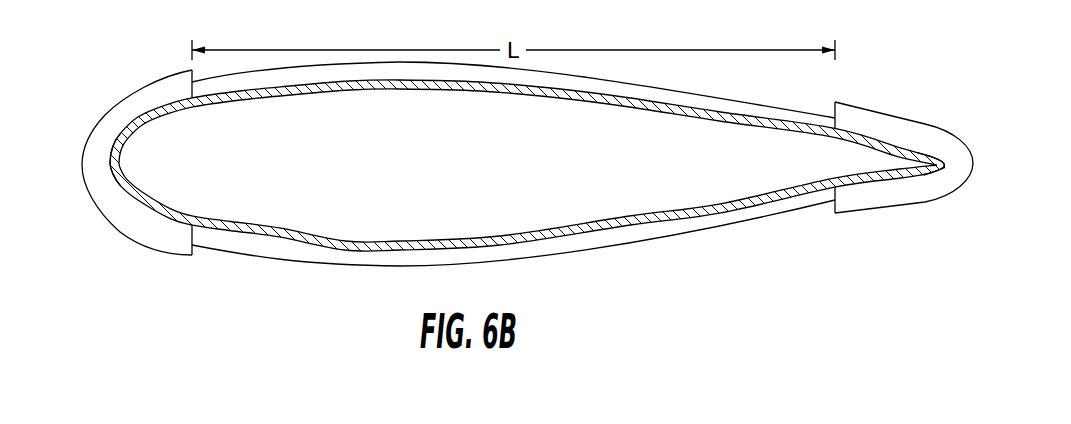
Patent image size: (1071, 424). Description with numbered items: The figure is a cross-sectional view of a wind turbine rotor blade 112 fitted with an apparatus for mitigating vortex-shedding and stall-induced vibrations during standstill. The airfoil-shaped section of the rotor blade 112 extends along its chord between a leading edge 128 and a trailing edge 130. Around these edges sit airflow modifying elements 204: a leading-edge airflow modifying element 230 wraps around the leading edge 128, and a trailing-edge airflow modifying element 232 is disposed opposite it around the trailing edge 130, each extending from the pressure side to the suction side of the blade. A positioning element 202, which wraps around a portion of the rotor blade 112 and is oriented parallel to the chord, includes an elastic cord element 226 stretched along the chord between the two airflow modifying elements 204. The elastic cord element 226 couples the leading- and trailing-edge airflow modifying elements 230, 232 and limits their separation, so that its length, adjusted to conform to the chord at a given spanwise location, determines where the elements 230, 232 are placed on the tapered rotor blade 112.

The rotor blade 112 is at (755, 162).
The leading edge 128 is at (110, 170).
The trailing edge 130 is at (951, 175).
The positioning element 202 is at (527, 164).
The elastic cord element 226 is at (250, 256).
The airflow modifying element 204 is at (527, 127).
The leading-edge airflow modifying element 230 is at (147, 95).
The trailing-edge airflow modifying element 232 is at (937, 137).